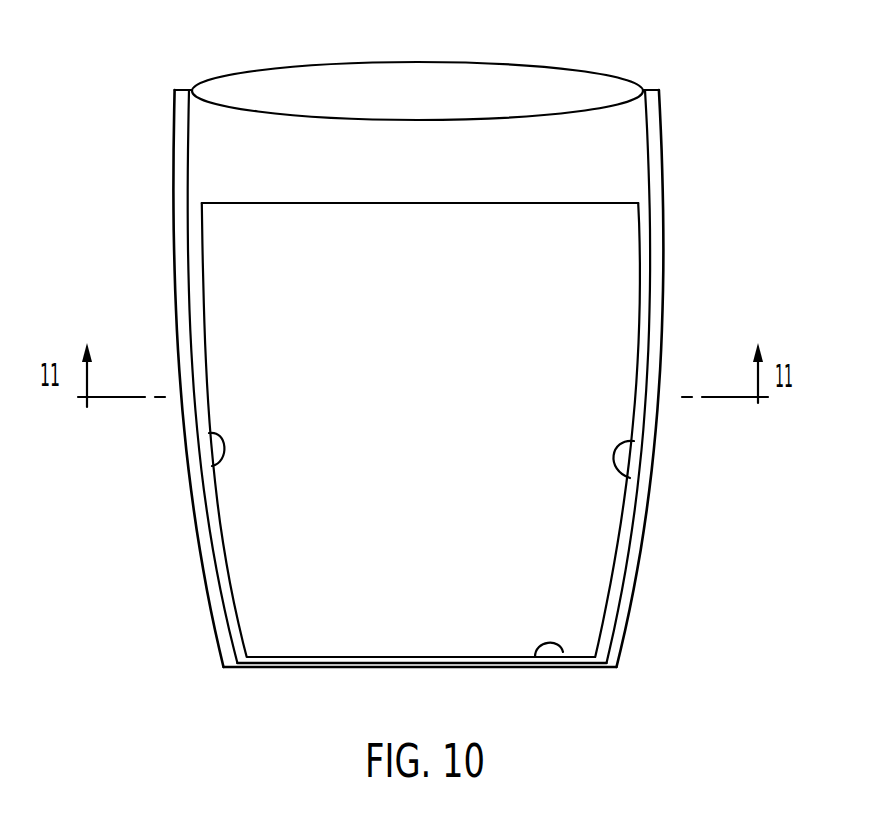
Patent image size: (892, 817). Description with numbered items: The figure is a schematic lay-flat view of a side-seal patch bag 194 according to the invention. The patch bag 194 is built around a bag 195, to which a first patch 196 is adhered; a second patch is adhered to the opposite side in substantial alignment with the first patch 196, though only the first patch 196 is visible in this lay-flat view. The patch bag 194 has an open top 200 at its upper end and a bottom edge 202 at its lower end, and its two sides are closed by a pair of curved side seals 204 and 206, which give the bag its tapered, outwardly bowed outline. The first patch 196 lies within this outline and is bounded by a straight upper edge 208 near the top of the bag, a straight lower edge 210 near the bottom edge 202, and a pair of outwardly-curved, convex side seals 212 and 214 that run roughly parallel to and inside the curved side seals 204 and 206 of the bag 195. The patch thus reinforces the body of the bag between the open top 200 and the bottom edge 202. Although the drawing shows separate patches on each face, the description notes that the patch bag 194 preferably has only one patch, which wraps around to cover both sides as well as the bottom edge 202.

The side-seal patch bag 194 is at (133, 168).
The bag 195 is at (622, 175).
The first patch 196 is at (595, 300).
The open top 200 is at (578, 80).
The bottom edge 202 is at (293, 670).
The curved side seal 204 is at (636, 512).
The curved side seal 206 is at (209, 530).
The straight upper edge 208 is at (251, 204).
The straight lower edge 210 is at (563, 652).
The outwardly-curved side seal 212 is at (218, 455).
The outwardly-curved side seal 214 is at (625, 468).